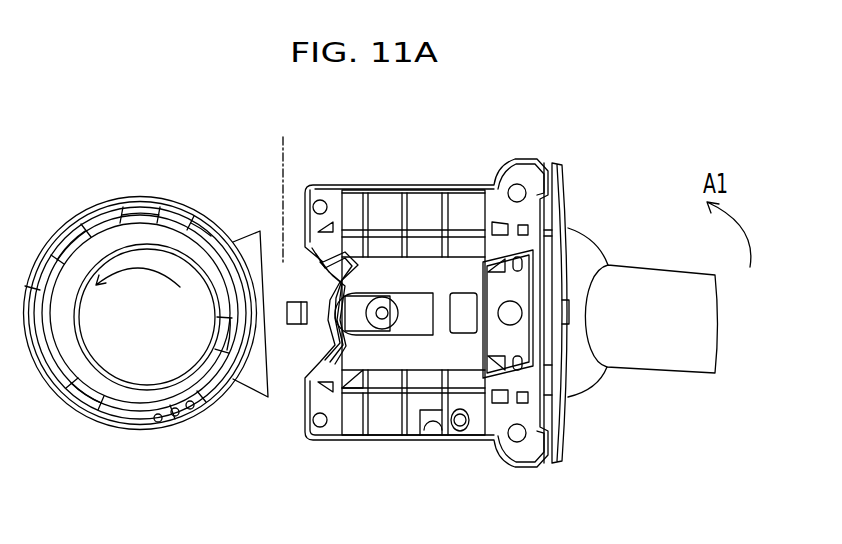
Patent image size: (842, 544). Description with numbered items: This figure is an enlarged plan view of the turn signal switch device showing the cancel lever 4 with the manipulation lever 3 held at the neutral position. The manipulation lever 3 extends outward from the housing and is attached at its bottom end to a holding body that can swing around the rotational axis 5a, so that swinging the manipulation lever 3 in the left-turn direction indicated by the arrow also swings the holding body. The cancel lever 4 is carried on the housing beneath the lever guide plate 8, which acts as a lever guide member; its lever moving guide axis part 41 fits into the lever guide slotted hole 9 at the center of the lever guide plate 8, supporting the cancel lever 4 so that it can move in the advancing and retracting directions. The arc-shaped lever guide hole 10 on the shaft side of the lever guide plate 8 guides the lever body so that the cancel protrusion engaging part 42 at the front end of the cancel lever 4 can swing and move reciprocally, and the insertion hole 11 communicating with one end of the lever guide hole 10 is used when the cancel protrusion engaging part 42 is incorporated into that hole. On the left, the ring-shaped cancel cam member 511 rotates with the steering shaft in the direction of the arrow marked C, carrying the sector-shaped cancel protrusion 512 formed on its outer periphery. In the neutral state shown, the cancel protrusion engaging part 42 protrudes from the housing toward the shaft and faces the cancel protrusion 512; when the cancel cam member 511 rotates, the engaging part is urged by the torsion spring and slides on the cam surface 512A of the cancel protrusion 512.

The manipulation lever 3 is at (662, 352).
The cancel lever 4 is at (362, 302).
The rotational axis 5a is at (543, 277).
The lever guide plate 8 is at (433, 195).
The lever guide slotted hole 9 is at (423, 332).
The lever guide hole 10 is at (308, 356).
The insertion hole 11 is at (353, 240).
The lever moving guide axis part 41 is at (381, 330).
The cancel protrusion engaging part 42 is at (312, 352).
The cancel cam member 511 is at (80, 398).
The cancel protrusion 512 is at (258, 247).
The cam surface 512A is at (283, 137).